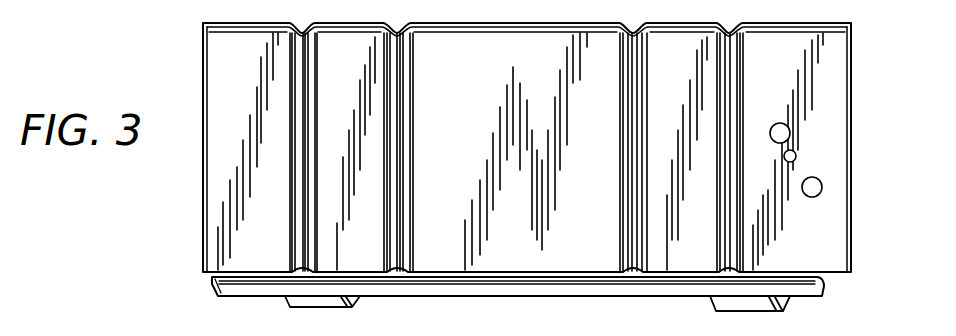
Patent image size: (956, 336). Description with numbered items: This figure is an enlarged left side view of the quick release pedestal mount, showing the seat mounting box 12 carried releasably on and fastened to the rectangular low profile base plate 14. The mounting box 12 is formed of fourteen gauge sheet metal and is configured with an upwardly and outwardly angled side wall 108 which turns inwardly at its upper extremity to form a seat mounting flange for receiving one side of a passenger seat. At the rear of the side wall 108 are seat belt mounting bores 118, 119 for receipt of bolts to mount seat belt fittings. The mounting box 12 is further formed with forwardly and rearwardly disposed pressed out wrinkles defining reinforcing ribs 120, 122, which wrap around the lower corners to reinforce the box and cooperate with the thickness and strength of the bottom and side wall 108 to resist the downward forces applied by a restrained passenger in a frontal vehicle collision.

The seat mounting box 12 is at (527, 136).
The base plate 14 is at (489, 302).
The side wall 108 is at (472, 52).
The seat belt mounting bore 118 is at (771, 126).
The seat belt mounting bore 119 is at (796, 155).
The reinforcing rib 120 is at (400, 62).
The reinforcing rib 122 is at (730, 27).